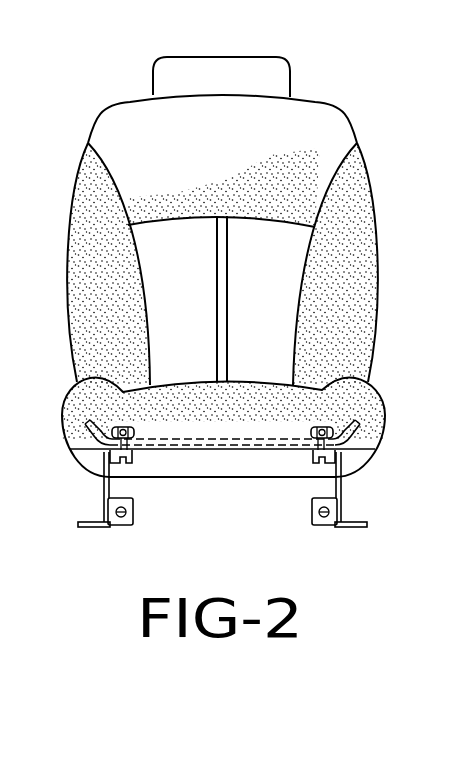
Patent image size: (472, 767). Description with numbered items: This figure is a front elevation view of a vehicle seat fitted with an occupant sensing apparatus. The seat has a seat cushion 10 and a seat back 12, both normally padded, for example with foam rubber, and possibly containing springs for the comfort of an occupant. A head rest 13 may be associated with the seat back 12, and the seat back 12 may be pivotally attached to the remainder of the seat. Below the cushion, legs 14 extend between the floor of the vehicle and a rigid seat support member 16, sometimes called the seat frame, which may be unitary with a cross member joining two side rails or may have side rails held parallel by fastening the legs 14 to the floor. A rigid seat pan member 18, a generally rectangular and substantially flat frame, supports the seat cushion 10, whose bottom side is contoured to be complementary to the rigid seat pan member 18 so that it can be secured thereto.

The seat cushion 10 is at (352, 388).
The seat back 12 is at (352, 177).
The head rest 13 is at (273, 66).
The legs 14 is at (340, 496).
The rigid seat support member 16 is at (135, 452).
The rigid seat pan member 18 is at (278, 440).